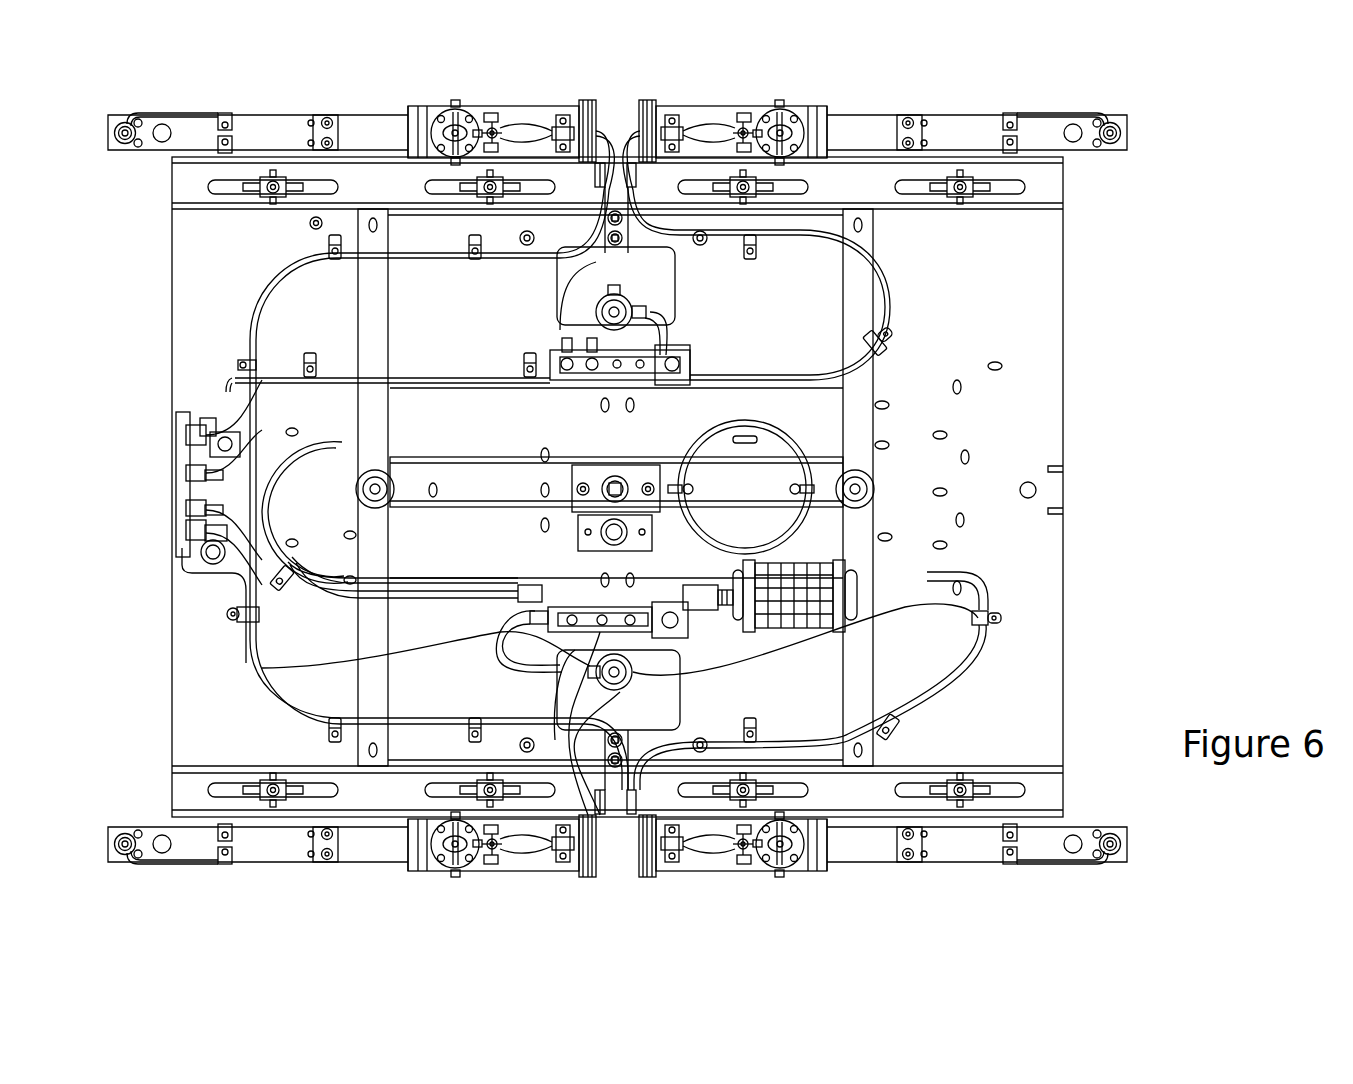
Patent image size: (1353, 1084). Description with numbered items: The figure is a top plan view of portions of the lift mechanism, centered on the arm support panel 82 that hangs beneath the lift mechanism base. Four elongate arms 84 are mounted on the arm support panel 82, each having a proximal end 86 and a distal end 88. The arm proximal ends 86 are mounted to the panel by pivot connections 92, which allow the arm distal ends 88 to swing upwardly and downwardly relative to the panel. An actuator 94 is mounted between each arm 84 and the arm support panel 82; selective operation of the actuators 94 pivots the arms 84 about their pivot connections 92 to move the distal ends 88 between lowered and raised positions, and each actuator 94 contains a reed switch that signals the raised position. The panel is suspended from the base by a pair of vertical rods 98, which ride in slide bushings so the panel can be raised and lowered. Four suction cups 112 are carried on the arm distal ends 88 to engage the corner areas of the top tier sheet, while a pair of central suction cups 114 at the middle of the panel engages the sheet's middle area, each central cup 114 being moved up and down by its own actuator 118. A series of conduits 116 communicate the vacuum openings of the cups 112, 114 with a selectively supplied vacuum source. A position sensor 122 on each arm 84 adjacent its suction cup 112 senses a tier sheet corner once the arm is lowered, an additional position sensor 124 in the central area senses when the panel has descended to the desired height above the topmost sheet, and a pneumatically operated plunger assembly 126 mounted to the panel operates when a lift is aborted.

The arm support panel 82 is at (215, 263).
The elongate arm 84 is at (270, 132).
The arm proximal end 86 is at (585, 122).
The arm distal end 88 is at (112, 148).
The pivot connection 92 is at (650, 128).
The actuator 94 is at (438, 130).
The vertical rod 98 is at (365, 476).
The suction cup 112 is at (128, 142).
The central suction cup 114 is at (640, 303).
The conduit 116 is at (182, 114).
The actuator 118 is at (625, 292).
The position sensor 122 is at (162, 128).
The position sensor 124 is at (600, 650).
The plunger assembly 126 is at (1037, 490).